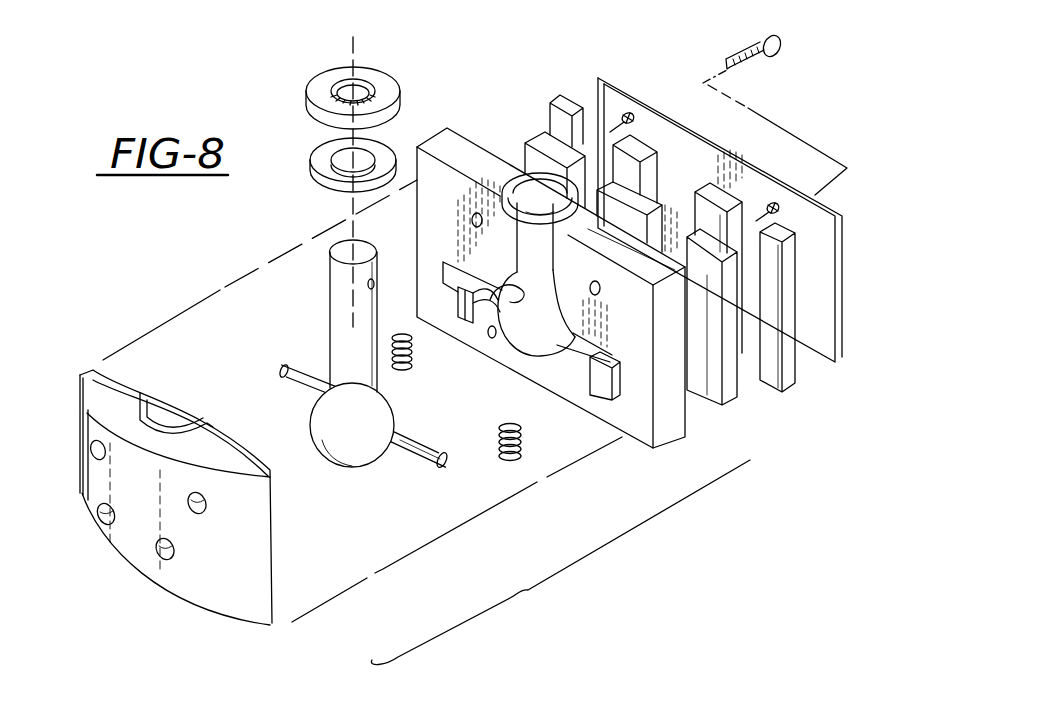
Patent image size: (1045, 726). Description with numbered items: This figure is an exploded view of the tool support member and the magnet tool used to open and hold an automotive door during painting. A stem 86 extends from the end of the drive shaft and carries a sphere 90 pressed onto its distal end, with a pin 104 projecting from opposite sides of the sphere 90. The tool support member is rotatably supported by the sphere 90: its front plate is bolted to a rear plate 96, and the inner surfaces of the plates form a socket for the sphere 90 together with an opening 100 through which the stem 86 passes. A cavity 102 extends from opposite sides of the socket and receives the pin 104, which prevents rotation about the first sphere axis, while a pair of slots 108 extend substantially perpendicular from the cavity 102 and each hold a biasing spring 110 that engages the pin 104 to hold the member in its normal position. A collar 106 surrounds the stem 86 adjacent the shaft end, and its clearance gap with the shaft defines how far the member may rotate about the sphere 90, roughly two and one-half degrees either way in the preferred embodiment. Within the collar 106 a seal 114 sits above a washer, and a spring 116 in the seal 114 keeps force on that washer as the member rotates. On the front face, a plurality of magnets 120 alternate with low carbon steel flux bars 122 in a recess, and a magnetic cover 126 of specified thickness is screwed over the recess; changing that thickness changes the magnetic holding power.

The stem 86 is at (332, 282).
The sphere 90 is at (350, 464).
The rear plate 96 is at (80, 460).
The opening 100 is at (523, 227).
The cavity 102 is at (542, 473).
The pin 104 is at (277, 387).
The collar 106 is at (497, 170).
The slots 108 is at (478, 342).
The biasing spring 110 is at (392, 350).
The seal 114 is at (307, 108).
The spring 116 is at (400, 100).
The magnets 120 is at (533, 140).
The flux bars 122 is at (557, 97).
The magnetic cover 126 is at (762, 163).